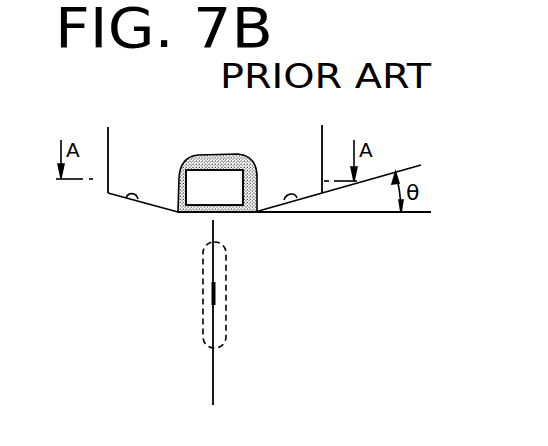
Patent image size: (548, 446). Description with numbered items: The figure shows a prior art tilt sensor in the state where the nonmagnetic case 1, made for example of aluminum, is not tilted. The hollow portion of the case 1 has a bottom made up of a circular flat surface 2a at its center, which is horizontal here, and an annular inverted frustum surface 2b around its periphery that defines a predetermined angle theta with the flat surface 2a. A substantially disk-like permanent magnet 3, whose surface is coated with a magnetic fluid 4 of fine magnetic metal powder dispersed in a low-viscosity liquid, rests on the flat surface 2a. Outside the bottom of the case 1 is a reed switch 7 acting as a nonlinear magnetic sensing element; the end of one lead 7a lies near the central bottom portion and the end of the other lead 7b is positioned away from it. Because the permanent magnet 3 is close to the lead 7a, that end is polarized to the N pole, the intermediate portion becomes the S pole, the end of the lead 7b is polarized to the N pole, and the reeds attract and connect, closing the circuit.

The nonmagnetic case 1 is at (108, 134).
The circular flat surface 2a is at (190, 215).
The annular inverted frustum surface 2b is at (129, 196).
The permanent magnet 3 is at (195, 184).
The magnetic fluid 4 is at (237, 160).
The reed switch 7 is at (226, 315).
The lead 7a is at (213, 237).
The lead 7b is at (213, 385).